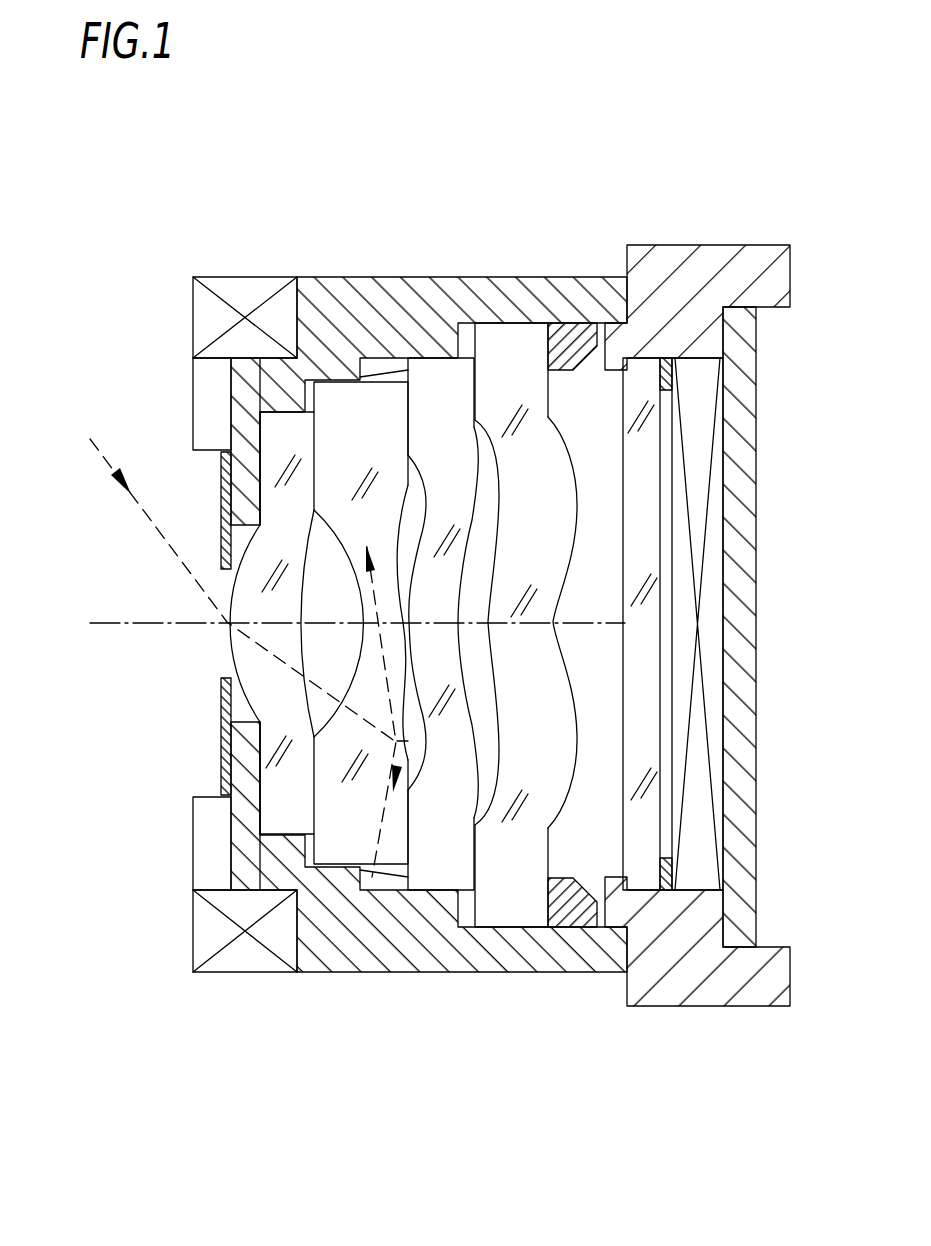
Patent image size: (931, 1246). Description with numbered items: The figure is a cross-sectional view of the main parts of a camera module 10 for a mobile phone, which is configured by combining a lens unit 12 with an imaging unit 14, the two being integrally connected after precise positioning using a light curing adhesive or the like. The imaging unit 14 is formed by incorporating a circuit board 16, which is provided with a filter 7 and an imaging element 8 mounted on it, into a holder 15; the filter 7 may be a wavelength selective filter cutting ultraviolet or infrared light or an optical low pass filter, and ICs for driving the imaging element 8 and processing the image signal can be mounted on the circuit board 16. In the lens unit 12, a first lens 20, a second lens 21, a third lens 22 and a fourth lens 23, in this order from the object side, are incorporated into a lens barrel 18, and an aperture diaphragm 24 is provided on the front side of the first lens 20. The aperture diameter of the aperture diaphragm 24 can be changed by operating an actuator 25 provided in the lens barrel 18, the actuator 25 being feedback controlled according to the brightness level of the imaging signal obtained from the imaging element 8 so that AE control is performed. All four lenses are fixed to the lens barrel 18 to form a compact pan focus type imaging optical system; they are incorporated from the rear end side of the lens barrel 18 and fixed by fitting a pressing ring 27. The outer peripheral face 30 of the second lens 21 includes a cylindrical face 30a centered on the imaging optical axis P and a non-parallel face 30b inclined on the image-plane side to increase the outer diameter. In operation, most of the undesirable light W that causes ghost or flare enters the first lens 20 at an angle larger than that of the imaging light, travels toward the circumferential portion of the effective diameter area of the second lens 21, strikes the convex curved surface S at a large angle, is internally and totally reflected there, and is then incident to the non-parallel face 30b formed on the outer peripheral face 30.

The camera module 10 is at (455, 254).
The lens unit 12 is at (300, 996).
The imaging unit 14 is at (722, 1032).
The holder 15 is at (732, 245).
The circuit board 16 is at (757, 580).
The lens barrel 18 is at (337, 277).
The first lens 20 is at (298, 450).
The second lens 21 is at (369, 425).
The third lens 22 is at (451, 413).
The fourth lens 23 is at (521, 370).
The aperture diaphragm 24 is at (219, 730).
The actuator 25 is at (193, 300).
The pressing ring 27 is at (575, 370).
The outer peripheral face 30 is at (447, 1018).
The cylindrical face 30a is at (323, 857).
The non-parallel face 30b is at (378, 377).
The filter 7 is at (648, 458).
The imaging element 8 is at (710, 390).
The undesirable light W is at (153, 526).
The imaging optical axis P is at (122, 625).
The convex curved surface S is at (397, 741).